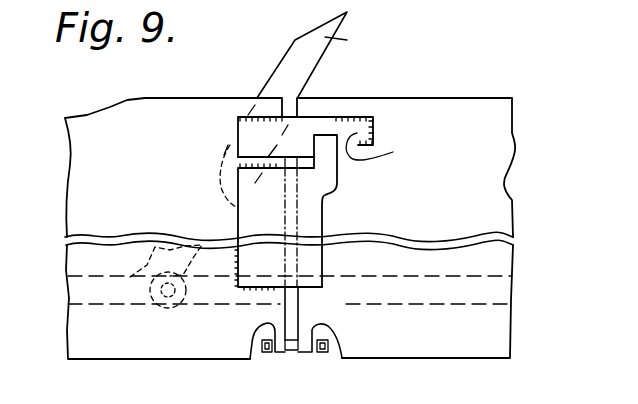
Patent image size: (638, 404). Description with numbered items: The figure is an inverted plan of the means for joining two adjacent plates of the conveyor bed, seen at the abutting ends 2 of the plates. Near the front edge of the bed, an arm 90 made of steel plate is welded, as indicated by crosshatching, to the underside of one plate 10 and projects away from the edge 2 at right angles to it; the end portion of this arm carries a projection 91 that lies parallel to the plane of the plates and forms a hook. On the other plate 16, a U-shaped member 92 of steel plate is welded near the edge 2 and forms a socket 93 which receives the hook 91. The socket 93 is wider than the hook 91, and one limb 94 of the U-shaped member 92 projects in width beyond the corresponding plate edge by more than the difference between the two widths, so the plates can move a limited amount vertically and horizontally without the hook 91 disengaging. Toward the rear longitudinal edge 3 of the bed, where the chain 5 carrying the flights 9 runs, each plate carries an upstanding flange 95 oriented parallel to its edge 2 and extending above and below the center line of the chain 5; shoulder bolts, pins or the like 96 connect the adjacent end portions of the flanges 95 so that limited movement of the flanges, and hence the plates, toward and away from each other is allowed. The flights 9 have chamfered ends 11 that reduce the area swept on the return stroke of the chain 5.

The abutting ends 2 is at (285, 313).
The rear longitudinal edge 3 is at (177, 360).
The chain 5 is at (78, 293).
The flights 9 is at (282, 72).
The upper plate 10 is at (92, 167).
The ends of the flights 11 is at (349, 41).
The side wall 16 is at (488, 147).
The arm 90 is at (267, 201).
The projection 91 is at (327, 145).
The U-shaped member 92 is at (360, 125).
The socket 93 is at (383, 148).
The limb 94 is at (253, 137).
The upstanding flange 95 is at (277, 355).
The shoulder bolts, pins or the like 96 is at (293, 352).